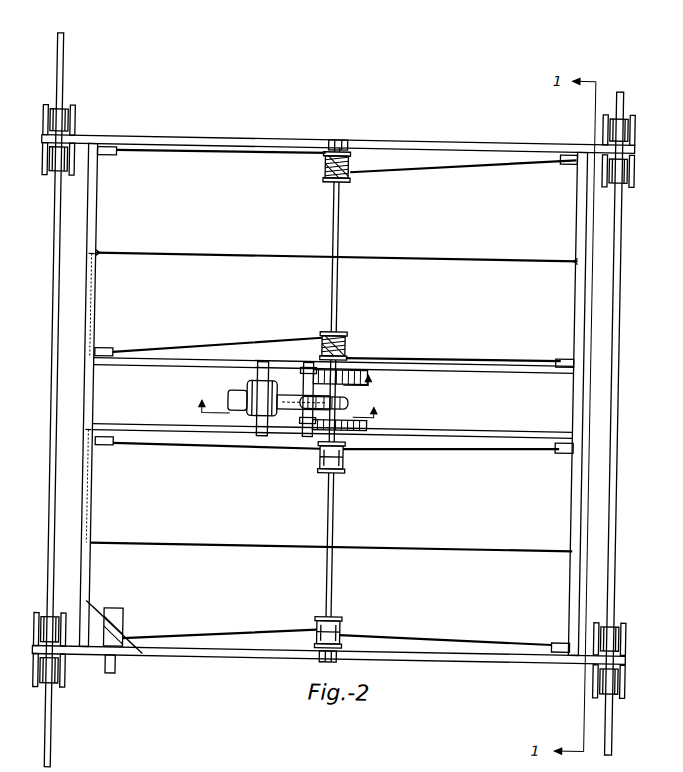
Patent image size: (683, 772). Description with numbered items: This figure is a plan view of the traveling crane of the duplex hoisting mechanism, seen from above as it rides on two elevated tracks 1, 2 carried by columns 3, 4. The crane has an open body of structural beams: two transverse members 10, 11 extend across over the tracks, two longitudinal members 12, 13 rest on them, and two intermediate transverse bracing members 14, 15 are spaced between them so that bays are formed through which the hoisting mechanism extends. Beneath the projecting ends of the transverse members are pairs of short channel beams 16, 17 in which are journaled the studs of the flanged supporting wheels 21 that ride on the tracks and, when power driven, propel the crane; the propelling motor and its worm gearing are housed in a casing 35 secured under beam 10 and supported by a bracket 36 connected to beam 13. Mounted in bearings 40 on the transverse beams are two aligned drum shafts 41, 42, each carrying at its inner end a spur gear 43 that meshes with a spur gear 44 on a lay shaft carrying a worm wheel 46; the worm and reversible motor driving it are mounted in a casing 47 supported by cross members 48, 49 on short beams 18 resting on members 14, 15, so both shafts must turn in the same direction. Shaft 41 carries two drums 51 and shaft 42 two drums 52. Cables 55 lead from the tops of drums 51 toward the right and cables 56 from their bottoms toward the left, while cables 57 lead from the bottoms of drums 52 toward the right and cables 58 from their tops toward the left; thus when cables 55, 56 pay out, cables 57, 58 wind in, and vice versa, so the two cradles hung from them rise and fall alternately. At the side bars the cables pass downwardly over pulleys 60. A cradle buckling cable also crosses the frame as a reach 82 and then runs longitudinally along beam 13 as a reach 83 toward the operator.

The track 1 is at (618, 342).
The track 2 is at (51, 328).
The column 3 is at (289, 407).
The column 4 is at (326, 381).
The transverse member 10 is at (444, 659).
The transverse member 11 is at (480, 138).
The longitudinal member 12 is at (573, 300).
The longitudinal member 13 is at (93, 297).
The intermediate transverse bracing member 14 is at (490, 429).
The intermediate transverse bracing member 15 is at (512, 370).
The short channel beam 16 is at (38, 160).
The short channel beam 17 is at (70, 124).
The short beam 18 is at (262, 363).
The supporting wheel 21 is at (42, 678).
The casing 35 is at (128, 623).
The bracket 36 is at (113, 620).
The bearing 40 is at (345, 142).
The drum shaft 41 is at (336, 520).
The drum shaft 42 is at (336, 291).
The spur gear 43 is at (340, 385).
The spur gear 44 is at (304, 368).
The worm wheel 46 is at (290, 412).
The casing 47 is at (227, 396).
The cross member 48 is at (251, 383).
The cross member 49 is at (330, 404).
The drum 51 is at (345, 468).
The drum 52 is at (346, 180).
The cable 55 is at (482, 451).
The cable 56 is at (240, 452).
The cable 57 is at (456, 166).
The cable 58 is at (248, 157).
The pulley 60 is at (104, 660).
The cable reach 82 is at (466, 257).
The cable reach 83 is at (88, 300).